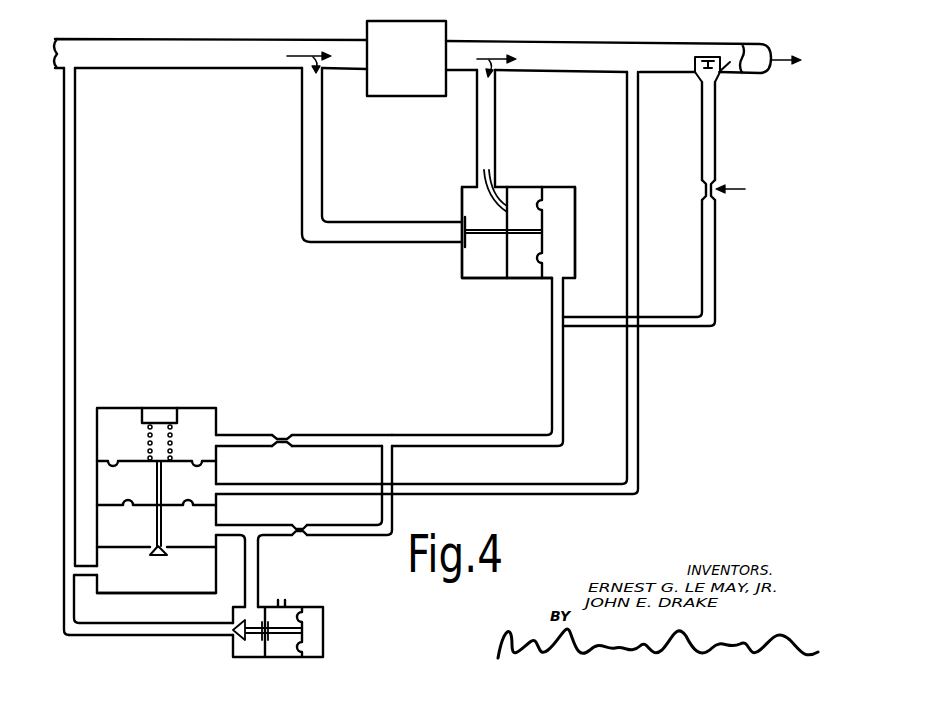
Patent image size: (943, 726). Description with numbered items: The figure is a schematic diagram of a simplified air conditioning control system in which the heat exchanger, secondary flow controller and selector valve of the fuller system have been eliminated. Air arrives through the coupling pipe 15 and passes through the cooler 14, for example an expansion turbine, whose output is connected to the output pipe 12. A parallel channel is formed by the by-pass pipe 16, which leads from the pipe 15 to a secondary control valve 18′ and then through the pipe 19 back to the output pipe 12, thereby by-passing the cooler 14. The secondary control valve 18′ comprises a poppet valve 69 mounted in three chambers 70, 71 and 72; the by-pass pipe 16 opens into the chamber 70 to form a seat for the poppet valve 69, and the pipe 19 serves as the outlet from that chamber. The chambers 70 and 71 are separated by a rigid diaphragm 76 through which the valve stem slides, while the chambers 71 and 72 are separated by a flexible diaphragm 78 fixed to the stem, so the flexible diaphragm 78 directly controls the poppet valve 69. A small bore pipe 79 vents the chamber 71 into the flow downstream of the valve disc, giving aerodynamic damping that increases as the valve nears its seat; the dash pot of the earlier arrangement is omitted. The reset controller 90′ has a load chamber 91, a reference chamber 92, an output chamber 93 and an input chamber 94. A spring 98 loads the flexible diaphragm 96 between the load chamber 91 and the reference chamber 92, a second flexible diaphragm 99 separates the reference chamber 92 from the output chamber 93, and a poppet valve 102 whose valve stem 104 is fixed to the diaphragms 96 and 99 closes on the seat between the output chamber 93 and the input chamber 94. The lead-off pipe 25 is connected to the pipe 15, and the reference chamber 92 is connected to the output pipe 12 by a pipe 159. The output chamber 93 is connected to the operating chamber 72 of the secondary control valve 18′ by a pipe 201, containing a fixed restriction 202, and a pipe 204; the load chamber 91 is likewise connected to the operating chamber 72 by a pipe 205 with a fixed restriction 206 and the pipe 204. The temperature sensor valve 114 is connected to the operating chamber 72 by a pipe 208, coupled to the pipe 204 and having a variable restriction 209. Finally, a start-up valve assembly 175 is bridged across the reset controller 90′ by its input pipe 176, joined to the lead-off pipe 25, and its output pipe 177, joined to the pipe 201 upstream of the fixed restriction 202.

The output pipe 12 is at (573, 43).
The cooler 14 is at (397, 84).
The coupling pipe 15 is at (215, 40).
The by-pass pipe 16 is at (373, 222).
The secondary control valve 18′ is at (528, 187).
The pipe 19 is at (496, 117).
The lead-off pipe 25 is at (77, 300).
The poppet valve 69 is at (470, 238).
The chamber 70 is at (461, 272).
The chamber 71 is at (522, 270).
The operating chamber 72 is at (577, 266).
The rigid diaphragm 76 is at (505, 268).
The flexible diaphragm 78 is at (545, 220).
The small bore pipe 79 is at (490, 177).
The reset controller 90′ is at (200, 408).
The load chamber 91 is at (203, 450).
The reference chamber 92 is at (198, 496).
The output chamber 93 is at (198, 540).
The input chamber 94 is at (198, 583).
The flexible diaphragm 96 is at (138, 458).
The spring 98 is at (146, 429).
The flexible diaphragm 99 is at (142, 505).
The poppet valve 102 is at (152, 557).
The valve stem 104 is at (157, 527).
The temperature sensor valve 114 is at (719, 78).
The pipe 159 is at (527, 495).
The start-up valve assembly 175 is at (325, 618).
The pipe 176 is at (137, 637).
The pipe 177 is at (259, 574).
The pipe 201 is at (255, 510).
The fixed restriction 202 is at (300, 538).
The pipe 204 is at (449, 435).
The pipe 205 is at (242, 434).
The fixed restriction 206 is at (283, 448).
The pipe 208 is at (716, 160).
The variable restriction 209 is at (701, 190).